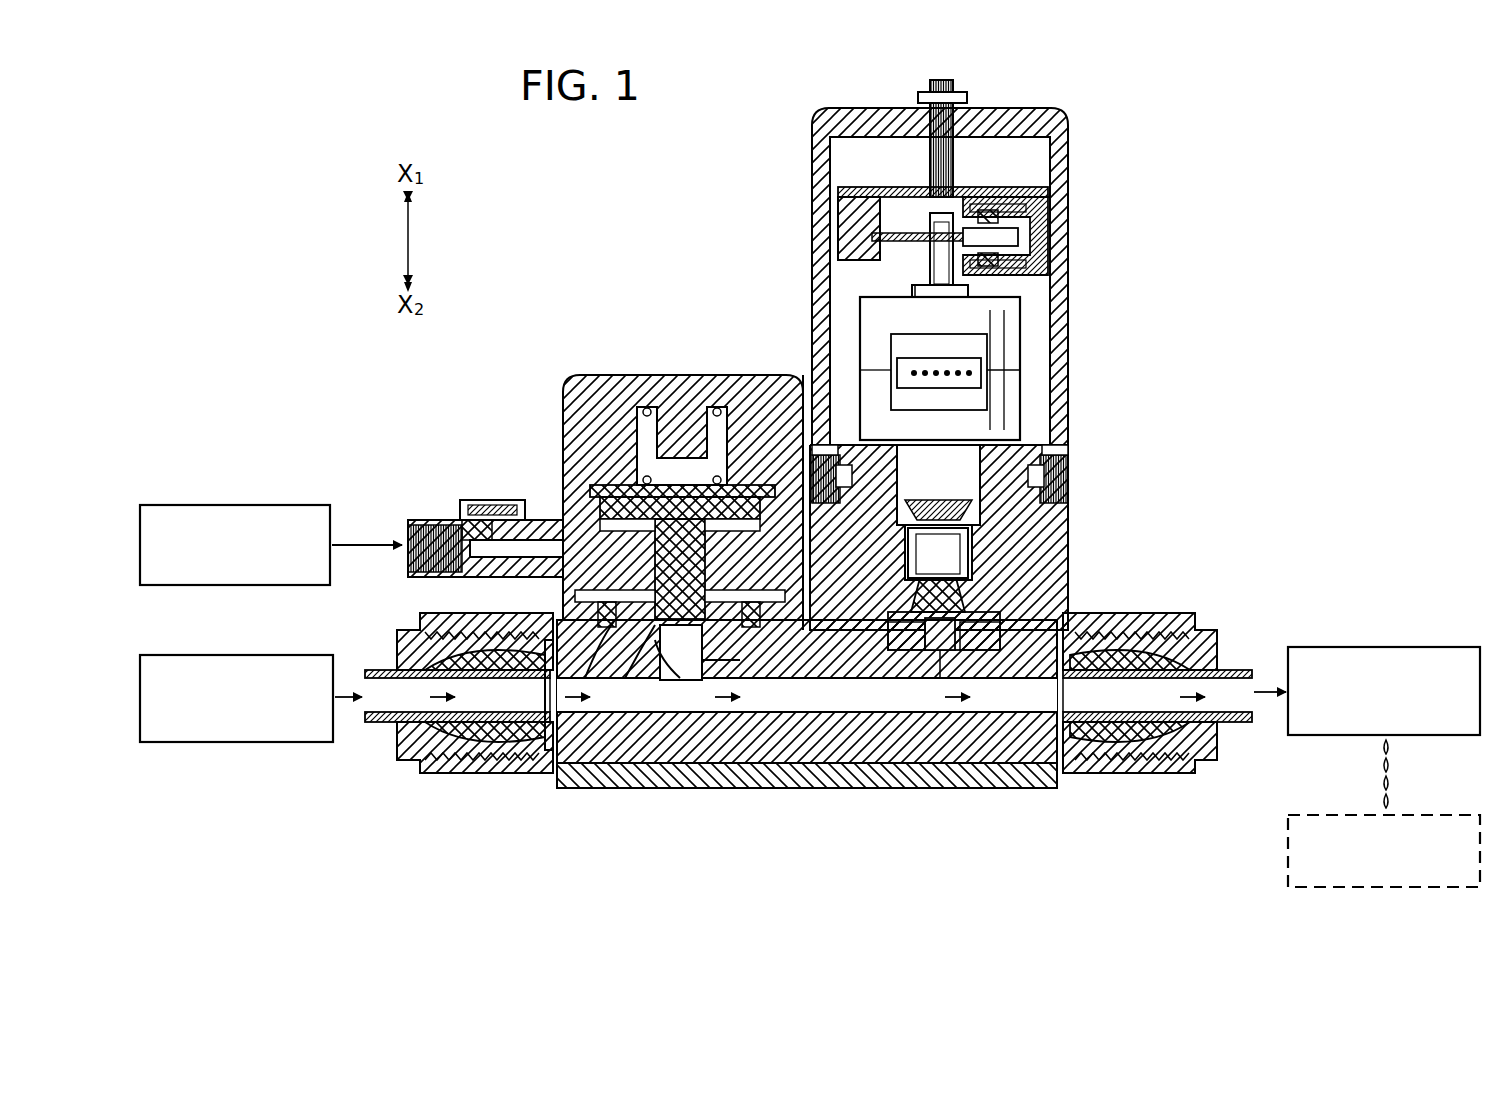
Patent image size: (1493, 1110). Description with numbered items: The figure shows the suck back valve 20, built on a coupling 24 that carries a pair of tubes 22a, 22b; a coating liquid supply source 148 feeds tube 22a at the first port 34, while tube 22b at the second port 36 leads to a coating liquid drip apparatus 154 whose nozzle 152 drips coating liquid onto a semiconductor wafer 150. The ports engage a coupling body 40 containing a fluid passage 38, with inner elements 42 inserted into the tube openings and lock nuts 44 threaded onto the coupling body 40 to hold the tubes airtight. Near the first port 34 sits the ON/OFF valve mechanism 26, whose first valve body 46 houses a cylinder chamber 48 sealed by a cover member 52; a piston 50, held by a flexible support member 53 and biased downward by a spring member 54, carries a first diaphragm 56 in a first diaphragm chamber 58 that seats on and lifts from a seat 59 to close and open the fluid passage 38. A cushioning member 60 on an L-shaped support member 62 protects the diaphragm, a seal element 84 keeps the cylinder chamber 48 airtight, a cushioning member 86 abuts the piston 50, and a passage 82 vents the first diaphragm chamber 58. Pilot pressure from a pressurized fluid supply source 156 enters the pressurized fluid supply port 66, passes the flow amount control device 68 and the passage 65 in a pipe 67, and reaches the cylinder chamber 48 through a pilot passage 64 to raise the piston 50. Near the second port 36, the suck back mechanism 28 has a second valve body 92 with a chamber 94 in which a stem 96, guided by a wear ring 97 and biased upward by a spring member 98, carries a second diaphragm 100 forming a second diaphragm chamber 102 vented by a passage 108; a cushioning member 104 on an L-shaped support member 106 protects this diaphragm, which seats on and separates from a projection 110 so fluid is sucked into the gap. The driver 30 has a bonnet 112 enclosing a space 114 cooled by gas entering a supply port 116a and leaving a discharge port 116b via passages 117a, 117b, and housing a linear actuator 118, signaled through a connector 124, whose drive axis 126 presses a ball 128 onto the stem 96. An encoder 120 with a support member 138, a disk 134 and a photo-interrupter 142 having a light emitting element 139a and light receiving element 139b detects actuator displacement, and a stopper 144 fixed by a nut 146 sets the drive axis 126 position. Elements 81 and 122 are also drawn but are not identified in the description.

The suck back valve 20 is at (1180, 138).
The tube 22a is at (372, 725).
The tube 22b is at (1237, 668).
The coupling 24 is at (724, 790).
The ON/OFF valve mechanism 26 is at (575, 378).
The suck back valve mechanism 28 is at (1072, 520).
The driver 30 is at (1072, 292).
The first port 34 is at (500, 770).
The second port 36 is at (1090, 765).
The fluid passage 38 is at (872, 700).
The coupling body 40 is at (668, 700).
The inner elements 42 is at (432, 745).
The lock nuts 44 is at (398, 640).
The first valve body 46 is at (792, 622).
The cylinder chamber 48 is at (762, 420).
The piston 50 is at (700, 470).
The cover member 52 is at (610, 398).
The support member 53 is at (598, 470).
The spring member 54 is at (720, 398).
The first diaphragm 56 is at (612, 690).
The first diaphragm chamber 58 is at (565, 690).
The seat 59 is at (670, 760).
The cushioning member 60 is at (740, 788).
The support member 62 is at (545, 775).
The pilot passage 64 is at (598, 490).
The passage 65 is at (420, 578).
The pressurized fluid supply port 66 is at (410, 538).
The pipe 67 is at (430, 523).
The flow amount control device 68 is at (465, 500).
The nut 81 is at (500, 498).
The passage 82 is at (570, 597).
The seal element 84 is at (662, 400).
The cushioning member 86 is at (605, 435).
The second valve body 92 is at (1045, 548).
The chamber 94 is at (1060, 505).
The stem 96 is at (962, 560).
The wear ring 97 is at (852, 632).
The spring member 98 is at (818, 632).
The second diaphragm 100 is at (945, 652).
The second diaphragm chamber 102 is at (1002, 630).
The cushioning member 104 is at (985, 652).
The support member 106 is at (905, 652).
The passage 108 is at (945, 606).
The projection 110 is at (930, 665).
The bonnet 112 is at (1035, 205).
The space 114 is at (1040, 347).
The supply port 116a is at (1045, 470).
The discharge port 116b is at (822, 460).
The passage 117a is at (1058, 440).
The passage 117b is at (814, 440).
The linear actuator 118 is at (1024, 331).
The encoder 120 is at (1027, 183).
The display 122 is at (990, 385).
The connector 124 is at (917, 358).
The drive axis 126 is at (938, 226).
The ball 128 is at (936, 518).
The disk 134 is at (915, 238).
The support member 138 is at (850, 222).
The light emitting element 139a is at (1000, 214).
The light receiving element 139b is at (1000, 264).
The photo-interrupter 142 is at (1012, 207).
The stopper 144 is at (945, 170).
The nut 146 is at (958, 98).
The coating liquid supply source 148 is at (282, 654).
The semiconductor wafer 150 is at (1400, 815).
The nozzle 152 is at (1388, 738).
The coating liquid drip apparatus 154 is at (1400, 646).
The pressurized fluid supply source 156 is at (282, 504).